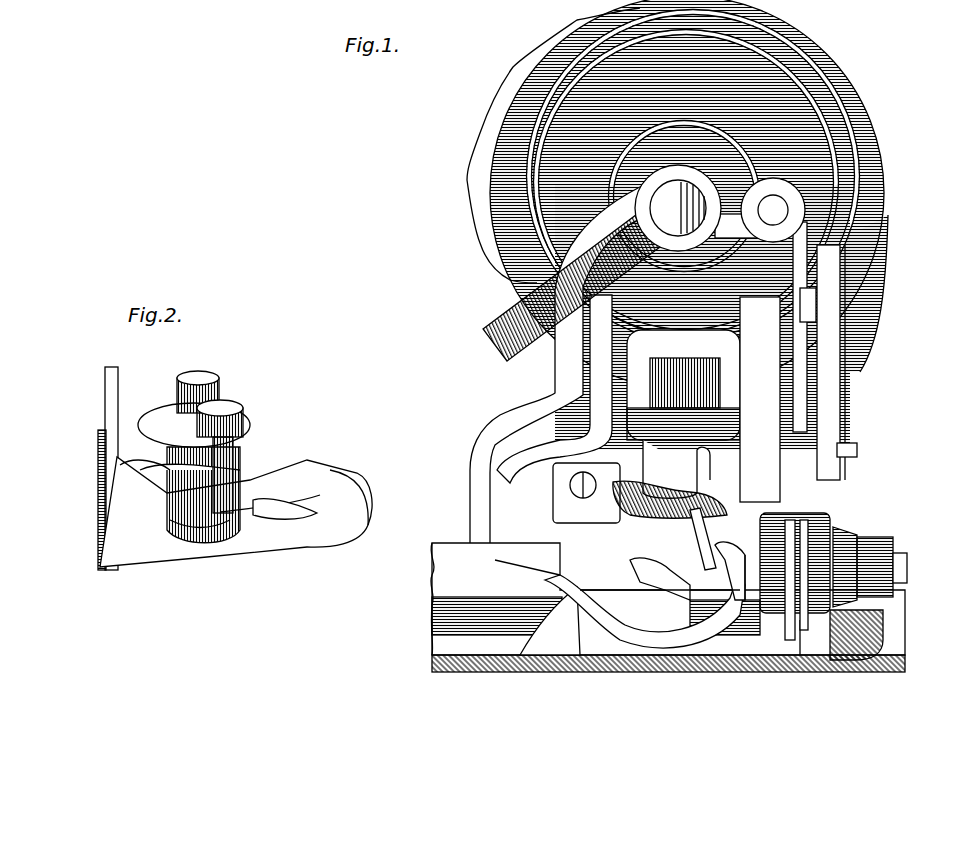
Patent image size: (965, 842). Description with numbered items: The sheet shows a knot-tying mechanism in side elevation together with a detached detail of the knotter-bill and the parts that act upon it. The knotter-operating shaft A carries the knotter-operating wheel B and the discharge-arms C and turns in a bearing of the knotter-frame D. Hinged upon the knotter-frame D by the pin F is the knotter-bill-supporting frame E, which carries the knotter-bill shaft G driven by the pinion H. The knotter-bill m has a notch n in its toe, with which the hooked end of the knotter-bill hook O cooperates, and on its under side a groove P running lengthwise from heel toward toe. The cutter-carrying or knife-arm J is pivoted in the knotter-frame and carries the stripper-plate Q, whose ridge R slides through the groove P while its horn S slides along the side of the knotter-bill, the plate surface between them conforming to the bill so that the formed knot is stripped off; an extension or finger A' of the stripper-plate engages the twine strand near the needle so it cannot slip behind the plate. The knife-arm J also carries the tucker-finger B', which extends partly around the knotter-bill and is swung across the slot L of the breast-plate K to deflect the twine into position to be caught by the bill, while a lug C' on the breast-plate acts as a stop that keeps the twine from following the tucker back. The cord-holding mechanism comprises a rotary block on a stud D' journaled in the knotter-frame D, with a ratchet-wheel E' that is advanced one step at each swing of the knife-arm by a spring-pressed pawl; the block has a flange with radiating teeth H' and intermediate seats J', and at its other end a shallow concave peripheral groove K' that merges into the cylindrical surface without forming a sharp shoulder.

In FIG. 1, the knotter-operating wheel B is at (687, 195).
In FIG. 1, the knotter-operating shaft A is at (678, 208).
In FIG. 1, the discharge-arms C is at (563, 283).
In FIG. 1, the cutter-carrying arm J is at (817, 399).
In FIG. 2, the cutter-carrying arm J is at (85, 468).
In FIG. 1, the pin F is at (575, 407).
In FIG. 1, the pinion H is at (628, 385).
In FIG. 1, the knotter-frame D is at (551, 391).
In FIG. 1, the knotter-bill-supporting frame E is at (526, 389).
In FIG. 1, the tucker-finger B' is at (506, 549).
In FIG. 2, the tucker-finger B' is at (349, 520).
In FIG. 1, the knotter-bill m is at (665, 527).
In FIG. 2, the knotter-bill m is at (180, 475).
In FIG. 1, the knotter-bill hook O is at (680, 545).
In FIG. 1, the slot or opening L is at (432, 633).
In FIG. 1, the lug or shoulder C' is at (537, 641).
In FIG. 1, the radiating teeth H' is at (749, 631).
In FIG. 1, the breast-plate K is at (660, 647).
In FIG. 1, the stripper-plate Q is at (682, 590).
In FIG. 2, the stripper-plate Q is at (215, 558).
In FIG. 1, the ridge R is at (690, 590).
In FIG. 2, the ridge R is at (190, 522).
In FIG. 1, the horn or finger S is at (725, 560).
In FIG. 2, the horn or finger S is at (170, 475).
In FIG. 1, the shallow peripheral groove K' is at (795, 609).
In FIG. 1, the knotter-bill shaft G is at (804, 630).
In FIG. 2, the knotter-bill shaft G is at (208, 375).
In FIG. 1, the seats or recesses J' is at (869, 558).
In FIG. 1, the stud D' is at (900, 567).
In FIG. 1, the ratchet-wheel E' is at (867, 556).
In FIG. 2, the notch n is at (150, 465).
In FIG. 2, the groove P is at (252, 470).
In FIG. 2, the extension or finger A' is at (283, 462).